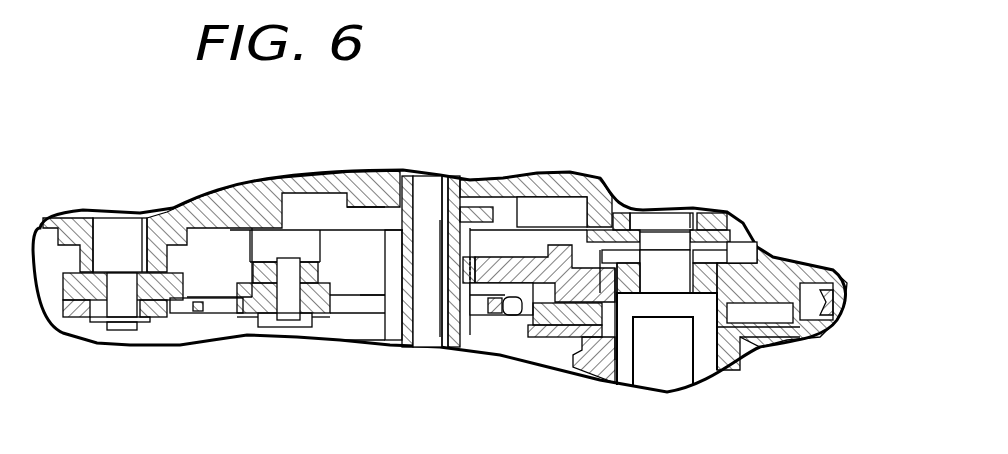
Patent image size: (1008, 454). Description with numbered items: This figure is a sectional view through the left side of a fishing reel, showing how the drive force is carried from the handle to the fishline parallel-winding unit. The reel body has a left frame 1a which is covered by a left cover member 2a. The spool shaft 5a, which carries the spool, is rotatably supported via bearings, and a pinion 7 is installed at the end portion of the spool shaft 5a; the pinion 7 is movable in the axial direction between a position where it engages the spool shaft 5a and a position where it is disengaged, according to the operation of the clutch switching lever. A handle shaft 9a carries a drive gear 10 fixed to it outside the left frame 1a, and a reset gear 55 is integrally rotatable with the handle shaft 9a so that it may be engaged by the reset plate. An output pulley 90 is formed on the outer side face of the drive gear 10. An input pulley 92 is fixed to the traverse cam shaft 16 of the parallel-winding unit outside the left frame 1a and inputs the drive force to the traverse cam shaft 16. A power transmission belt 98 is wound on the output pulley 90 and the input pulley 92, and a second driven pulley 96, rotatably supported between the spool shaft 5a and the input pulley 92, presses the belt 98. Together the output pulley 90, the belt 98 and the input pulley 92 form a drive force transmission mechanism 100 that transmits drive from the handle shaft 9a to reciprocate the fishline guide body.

The left frame 1a is at (215, 198).
The left cover member 2a is at (573, 365).
The spool shaft 5a is at (437, 183).
The pinion 7 is at (393, 260).
The handle shaft 9a is at (633, 363).
The drive gear 10 is at (507, 260).
The traverse cam shaft 16 is at (126, 220).
The reset gear 55 is at (607, 200).
The output pulley 90 is at (530, 320).
The input pulley 92 is at (83, 310).
The second driven pulley 96 is at (310, 325).
The power transmission belt 98 is at (366, 310).
The drive force transmission mechanism 100 is at (262, 344).